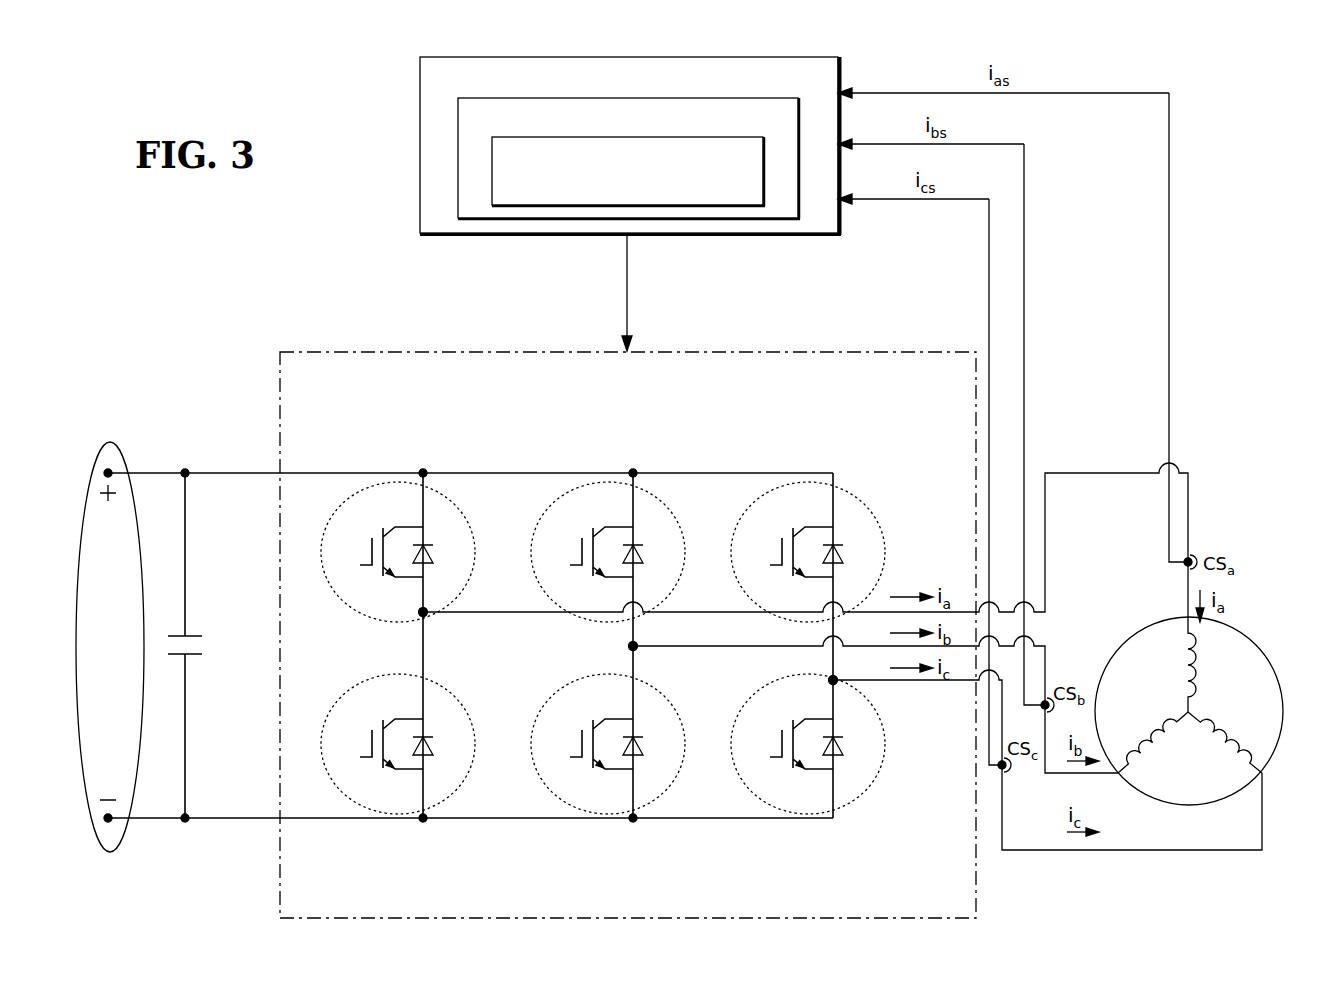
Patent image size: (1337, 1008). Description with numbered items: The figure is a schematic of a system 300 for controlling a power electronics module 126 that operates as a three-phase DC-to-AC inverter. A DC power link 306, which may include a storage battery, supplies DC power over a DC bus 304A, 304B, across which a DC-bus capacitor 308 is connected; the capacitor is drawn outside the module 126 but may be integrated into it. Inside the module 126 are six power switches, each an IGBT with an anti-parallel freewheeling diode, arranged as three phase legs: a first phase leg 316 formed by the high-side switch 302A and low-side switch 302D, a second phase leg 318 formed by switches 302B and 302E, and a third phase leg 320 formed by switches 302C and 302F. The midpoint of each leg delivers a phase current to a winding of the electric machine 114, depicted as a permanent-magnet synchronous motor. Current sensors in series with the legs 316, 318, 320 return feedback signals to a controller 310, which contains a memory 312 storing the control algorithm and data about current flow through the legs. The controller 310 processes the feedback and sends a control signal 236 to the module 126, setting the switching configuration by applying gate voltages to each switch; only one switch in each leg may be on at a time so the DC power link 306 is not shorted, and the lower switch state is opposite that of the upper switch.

The system 300 is at (933, 50).
The controller 310 is at (628, 56).
The memory 312 is at (787, 97).
The power electronics module 126 is at (478, 352).
The control signal 236 is at (614, 287).
The DC power link 306 is at (108, 442).
The DC bus 304A is at (246, 461).
The DC bus 304B is at (246, 830).
The DC-bus capacitor 308 is at (193, 658).
The high-side switch 302A is at (383, 487).
The high-side switch 302B is at (593, 487).
The high-side switch 302C is at (793, 487).
The low-side switch 302D is at (392, 812).
The low-side switch 302E is at (602, 812).
The low-side switch 302F is at (802, 812).
The first phase leg 316 is at (423, 614).
The second phase leg 318 is at (632, 646).
The third phase leg 320 is at (833, 680).
The electric machine 114 is at (1257, 640).